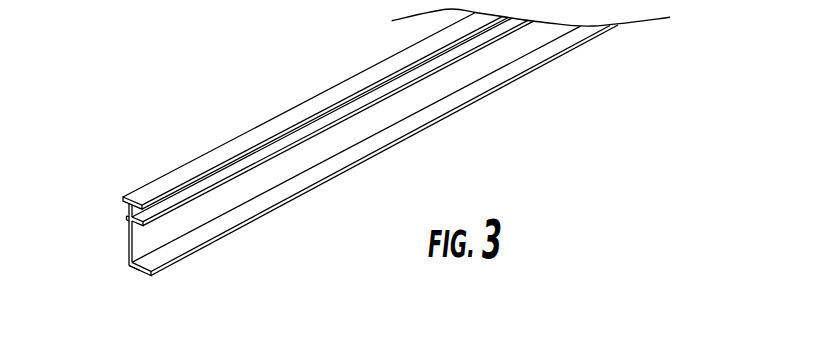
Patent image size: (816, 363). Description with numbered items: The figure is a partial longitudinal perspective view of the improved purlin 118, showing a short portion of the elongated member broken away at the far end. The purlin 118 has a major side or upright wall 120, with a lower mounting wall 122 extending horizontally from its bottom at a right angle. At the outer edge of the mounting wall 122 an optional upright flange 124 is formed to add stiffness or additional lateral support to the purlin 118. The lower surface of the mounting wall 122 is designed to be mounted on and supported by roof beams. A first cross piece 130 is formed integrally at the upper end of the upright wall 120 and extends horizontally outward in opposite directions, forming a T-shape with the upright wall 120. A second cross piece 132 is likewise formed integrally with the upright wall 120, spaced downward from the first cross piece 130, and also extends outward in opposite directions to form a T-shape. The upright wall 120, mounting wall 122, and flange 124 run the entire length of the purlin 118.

The purlin 118 is at (351, 179).
The upright wall 120 is at (140, 240).
The mounting wall 122 is at (150, 272).
The upright flange 124 is at (197, 259).
The first cross piece 130 is at (177, 178).
The second cross piece 132 is at (131, 221).